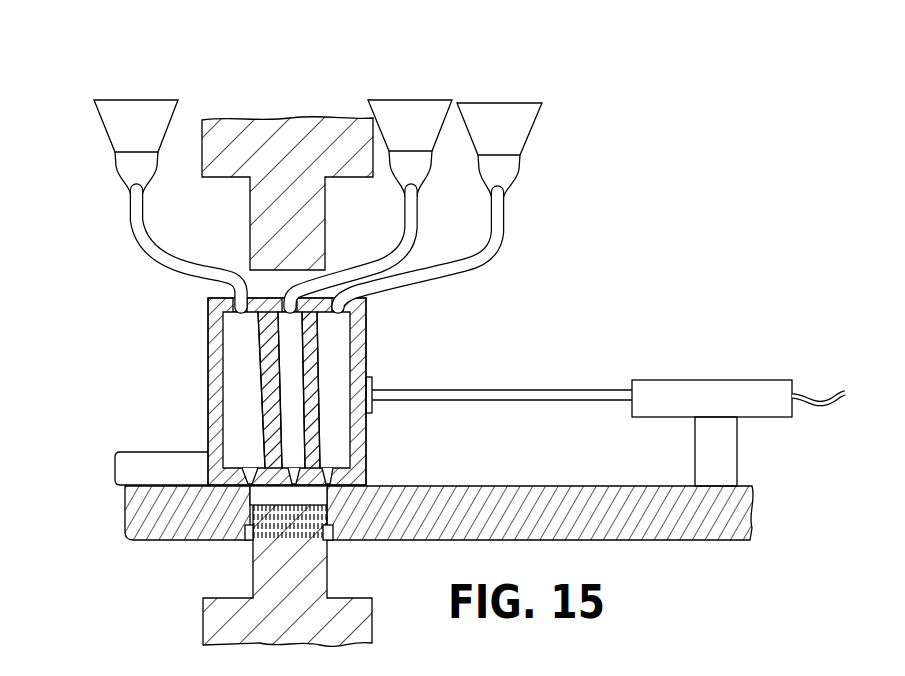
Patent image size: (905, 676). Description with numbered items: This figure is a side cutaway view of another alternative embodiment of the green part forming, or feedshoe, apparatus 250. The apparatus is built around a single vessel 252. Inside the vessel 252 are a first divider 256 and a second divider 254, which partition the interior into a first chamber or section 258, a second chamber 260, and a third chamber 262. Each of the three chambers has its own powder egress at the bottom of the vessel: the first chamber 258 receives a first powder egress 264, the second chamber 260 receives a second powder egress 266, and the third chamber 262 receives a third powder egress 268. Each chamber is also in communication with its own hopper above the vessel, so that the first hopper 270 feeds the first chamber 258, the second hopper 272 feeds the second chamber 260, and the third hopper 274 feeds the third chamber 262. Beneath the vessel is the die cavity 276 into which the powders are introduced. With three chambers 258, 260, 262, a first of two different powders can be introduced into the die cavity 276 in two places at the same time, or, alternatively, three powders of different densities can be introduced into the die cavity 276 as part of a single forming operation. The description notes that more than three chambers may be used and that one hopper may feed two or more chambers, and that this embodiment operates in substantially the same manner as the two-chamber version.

The green part forming (feedshoe) apparatus 250 is at (405, 370).
The vessel 252 is at (276, 439).
The second divider 254 is at (320, 356).
The first divider 256 is at (270, 349).
The first chamber 258 is at (243, 428).
The second chamber 260 is at (293, 404).
The third chamber 262 is at (332, 378).
The first powder egress 264 is at (250, 472).
The second powder egress 266 is at (294, 470).
The third powder egress 268 is at (328, 482).
The first hopper 270 is at (132, 112).
The second hopper 272 is at (387, 112).
The third hopper 274 is at (498, 118).
The die cavity 276 is at (305, 493).